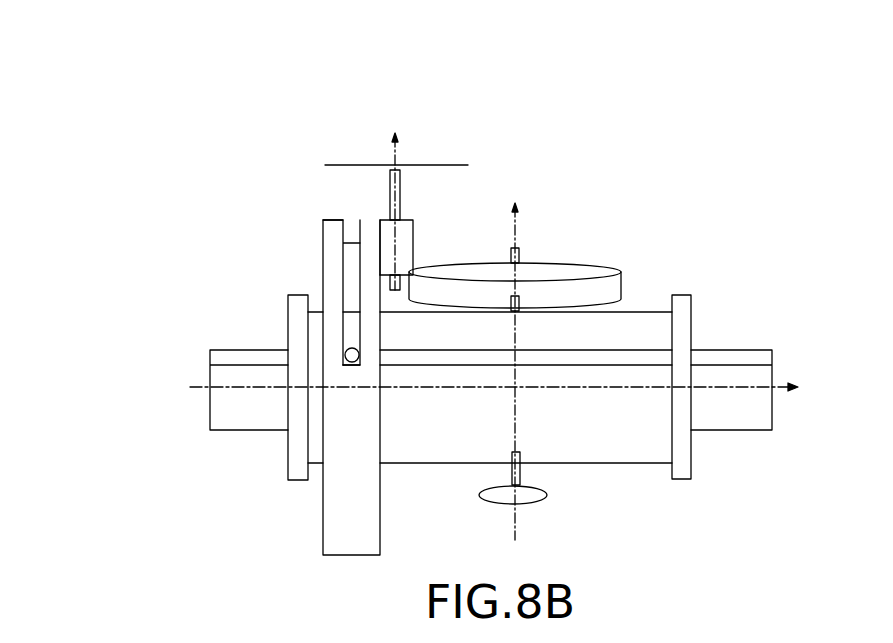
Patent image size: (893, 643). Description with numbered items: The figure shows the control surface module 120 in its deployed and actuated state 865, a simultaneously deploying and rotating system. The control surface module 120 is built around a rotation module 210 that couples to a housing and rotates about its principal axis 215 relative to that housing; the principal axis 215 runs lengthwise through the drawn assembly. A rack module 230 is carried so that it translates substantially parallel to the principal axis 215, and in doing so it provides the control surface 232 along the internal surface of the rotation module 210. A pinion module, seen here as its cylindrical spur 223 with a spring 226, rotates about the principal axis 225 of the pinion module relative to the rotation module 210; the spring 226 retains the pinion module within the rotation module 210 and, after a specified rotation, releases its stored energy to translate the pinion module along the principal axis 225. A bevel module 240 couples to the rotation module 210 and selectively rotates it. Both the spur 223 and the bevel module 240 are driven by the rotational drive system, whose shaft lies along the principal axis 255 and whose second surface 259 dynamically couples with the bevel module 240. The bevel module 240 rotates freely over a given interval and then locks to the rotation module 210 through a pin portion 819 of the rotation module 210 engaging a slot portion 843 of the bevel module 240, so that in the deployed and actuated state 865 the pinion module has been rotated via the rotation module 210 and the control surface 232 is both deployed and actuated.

The control surface module 120 is at (650, 130).
The rotation module 210 is at (640, 310).
The principal axis of rotation module 215 is at (782, 386).
The cylindrical spur 223 is at (590, 268).
The principal axis of pinion module 225 is at (517, 222).
The spring 226 is at (520, 250).
The rack module 230 is at (210, 415).
The control surface 232 is at (228, 357).
The bevel module 240 is at (343, 537).
The principal axis of shaft 255 is at (398, 146).
The second surface 259 is at (413, 232).
The pin portion 819 is at (346, 350).
The slot portion 843 is at (323, 232).
The deployed and actuated state 865 is at (148, 387).